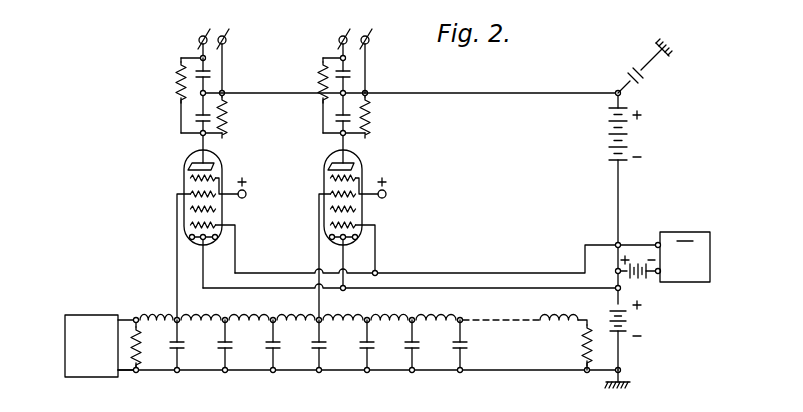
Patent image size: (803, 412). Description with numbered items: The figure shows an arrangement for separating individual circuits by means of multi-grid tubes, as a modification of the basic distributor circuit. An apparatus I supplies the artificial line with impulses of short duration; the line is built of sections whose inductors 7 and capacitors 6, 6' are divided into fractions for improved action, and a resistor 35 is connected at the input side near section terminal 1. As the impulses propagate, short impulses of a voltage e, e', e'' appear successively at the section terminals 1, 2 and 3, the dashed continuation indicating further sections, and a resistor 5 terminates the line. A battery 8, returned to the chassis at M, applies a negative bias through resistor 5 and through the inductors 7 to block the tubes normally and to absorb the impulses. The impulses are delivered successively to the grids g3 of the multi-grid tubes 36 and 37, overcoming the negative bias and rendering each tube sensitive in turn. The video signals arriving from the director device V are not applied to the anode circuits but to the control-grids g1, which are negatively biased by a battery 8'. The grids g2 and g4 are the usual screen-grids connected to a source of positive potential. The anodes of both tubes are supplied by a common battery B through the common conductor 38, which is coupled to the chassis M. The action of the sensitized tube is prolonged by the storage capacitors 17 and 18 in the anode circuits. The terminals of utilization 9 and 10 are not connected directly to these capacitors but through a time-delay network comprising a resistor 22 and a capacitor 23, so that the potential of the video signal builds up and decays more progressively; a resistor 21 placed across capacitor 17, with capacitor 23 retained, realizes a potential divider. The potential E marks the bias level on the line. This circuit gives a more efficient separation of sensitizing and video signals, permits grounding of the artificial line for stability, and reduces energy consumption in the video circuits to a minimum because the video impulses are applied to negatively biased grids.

The terminal of utilization 9 is at (205, 50).
The terminal of utilization 10 is at (345, 70).
The resistor 22 is at (186, 95).
The capacitor 23 is at (211, 75).
The capacitor 17 is at (195, 119).
The capacitor 18 is at (335, 119).
The resistor 21 is at (304, 115).
The common conductor 38 is at (410, 85).
The screen-grid g4 is at (190, 178).
The grid g3 is at (189, 195).
The screen-grid g2 is at (190, 210).
The control-grid g1 is at (190, 226).
The multi-grid tube 36 is at (219, 211).
The multi-grid tube 37 is at (359, 211).
The impulse supply apparatus I is at (100, 346).
The input resistor 35 is at (145, 345).
The section terminal 1 is at (172, 317).
The impulse voltage e is at (188, 308).
The inductor 7 is at (208, 315).
The section terminal 2 is at (317, 317).
The potential E is at (325, 312).
The impulse voltage e' is at (341, 297).
The section terminal 3 is at (460, 317).
The impulse voltage e'' is at (479, 298).
The capacitor 6 is at (318, 345).
The capacitor 6' is at (327, 345).
The resistor 5 is at (571, 343).
The common battery B is at (633, 198).
The battery 8' is at (638, 250).
The director device V is at (683, 257).
The battery 8 is at (629, 335).
The chassis M is at (646, 209).